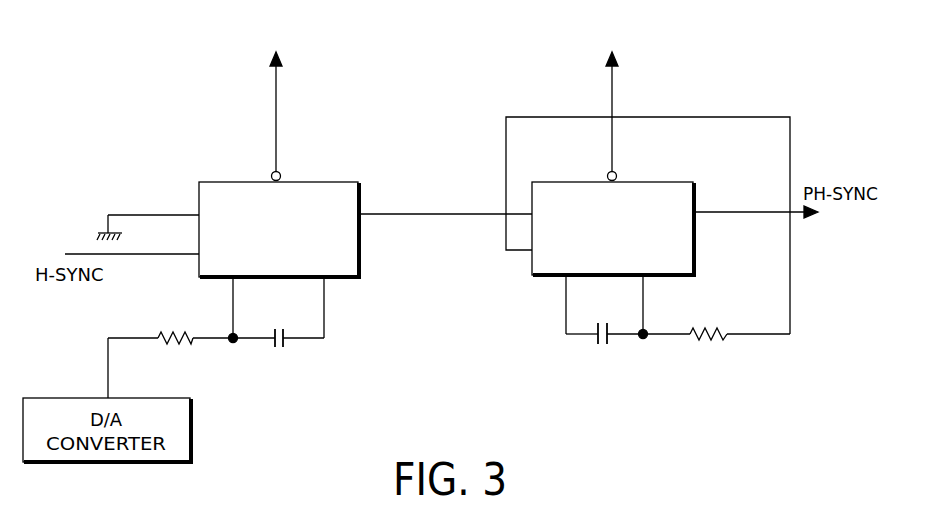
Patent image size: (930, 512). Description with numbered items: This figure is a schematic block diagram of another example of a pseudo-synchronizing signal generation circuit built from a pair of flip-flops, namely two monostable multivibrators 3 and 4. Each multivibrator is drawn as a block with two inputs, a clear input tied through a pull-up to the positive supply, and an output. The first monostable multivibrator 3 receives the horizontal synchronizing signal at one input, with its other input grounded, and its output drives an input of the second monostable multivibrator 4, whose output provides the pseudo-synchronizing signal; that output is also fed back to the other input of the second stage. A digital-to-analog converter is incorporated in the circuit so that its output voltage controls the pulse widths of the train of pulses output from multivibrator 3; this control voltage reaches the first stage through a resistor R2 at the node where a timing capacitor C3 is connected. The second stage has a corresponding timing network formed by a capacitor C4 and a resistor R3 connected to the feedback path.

The monostable multivibrator 3 is at (238, 181).
The monostable multivibrator 4 is at (560, 181).
The resistor R2 is at (175, 351).
The capacitor C3 is at (277, 354).
The capacitor C4 is at (598, 347).
The resistor R3 is at (708, 349).